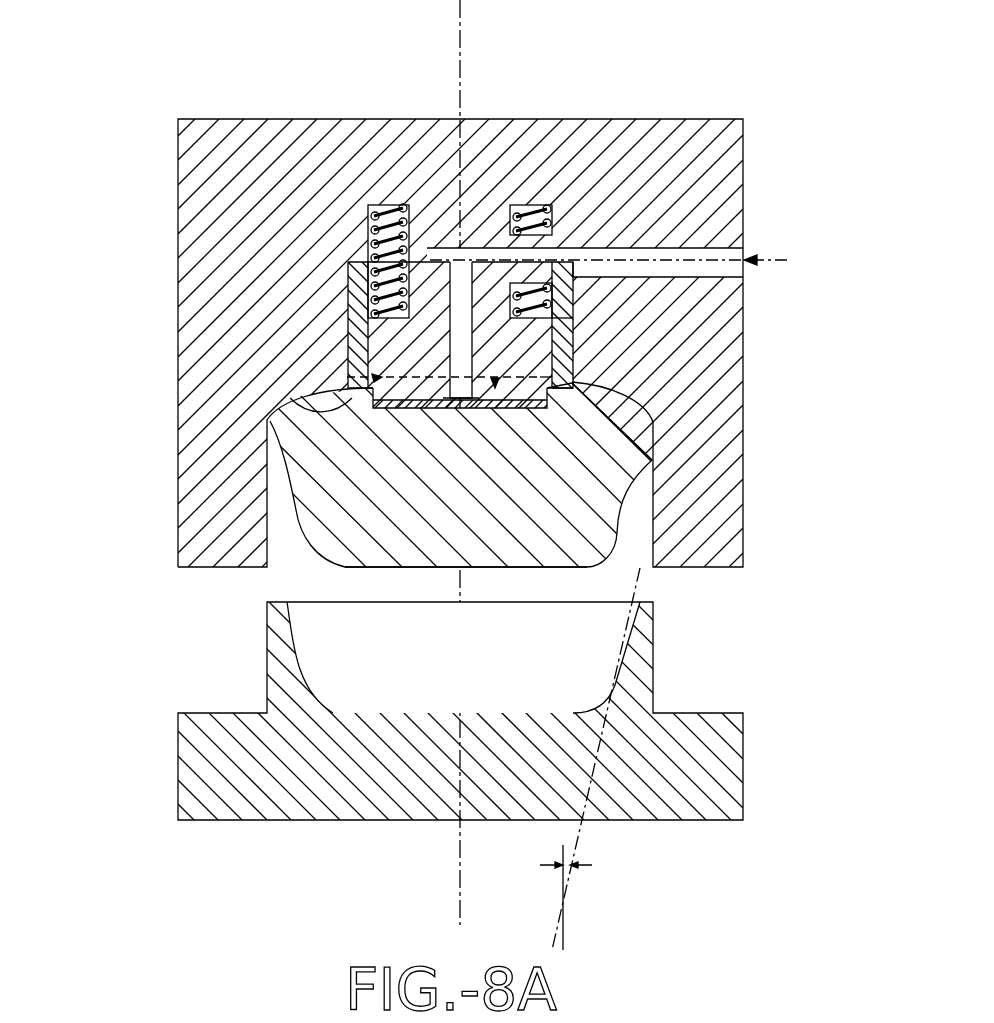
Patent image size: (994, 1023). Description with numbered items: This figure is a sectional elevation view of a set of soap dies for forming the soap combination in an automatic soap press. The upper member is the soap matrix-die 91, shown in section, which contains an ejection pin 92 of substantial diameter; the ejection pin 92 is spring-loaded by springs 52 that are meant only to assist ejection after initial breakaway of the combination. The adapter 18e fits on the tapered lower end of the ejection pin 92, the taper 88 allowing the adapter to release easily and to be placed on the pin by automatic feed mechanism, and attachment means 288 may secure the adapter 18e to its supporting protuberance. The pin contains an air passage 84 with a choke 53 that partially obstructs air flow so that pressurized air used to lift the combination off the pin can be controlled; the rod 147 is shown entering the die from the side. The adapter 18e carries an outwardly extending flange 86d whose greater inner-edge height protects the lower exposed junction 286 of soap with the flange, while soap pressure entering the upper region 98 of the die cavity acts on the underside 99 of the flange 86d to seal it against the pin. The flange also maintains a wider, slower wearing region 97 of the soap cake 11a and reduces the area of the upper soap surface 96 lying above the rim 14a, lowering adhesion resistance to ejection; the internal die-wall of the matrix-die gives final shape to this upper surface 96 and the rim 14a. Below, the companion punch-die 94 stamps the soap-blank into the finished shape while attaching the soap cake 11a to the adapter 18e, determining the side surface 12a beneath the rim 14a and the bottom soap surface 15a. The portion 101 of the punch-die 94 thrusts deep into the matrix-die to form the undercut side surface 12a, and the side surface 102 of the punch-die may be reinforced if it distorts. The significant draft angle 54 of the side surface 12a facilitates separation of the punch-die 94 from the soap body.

The soap matrix-die 91 is at (178, 200).
The spring 52 is at (367, 243).
The choke 53 is at (450, 392).
The passage 84 is at (470, 268).
The ejection pin 92 is at (490, 262).
The rod 147 is at (750, 258).
The taper 88 is at (367, 313).
The flange 86d is at (355, 382).
The underside of flange 99 is at (380, 378).
The upper region of matrix-die cavity 98 is at (290, 398).
The soap cake 11a is at (368, 512).
The rim 14a is at (655, 430).
The slower wearing region 97 is at (570, 395).
The side surface 12a is at (580, 410).
The adapter 18e is at (575, 315).
The attachment means 288 is at (558, 335).
The junction 286 is at (555, 372).
The upper soap surface 96 is at (575, 385).
The bottom soap surface 15a is at (415, 567).
The punch-die 94 is at (178, 765).
The portion of punch-die 101 is at (275, 636).
The side surface of punch-die 102 is at (655, 660).
The draft angle 54 is at (573, 860).